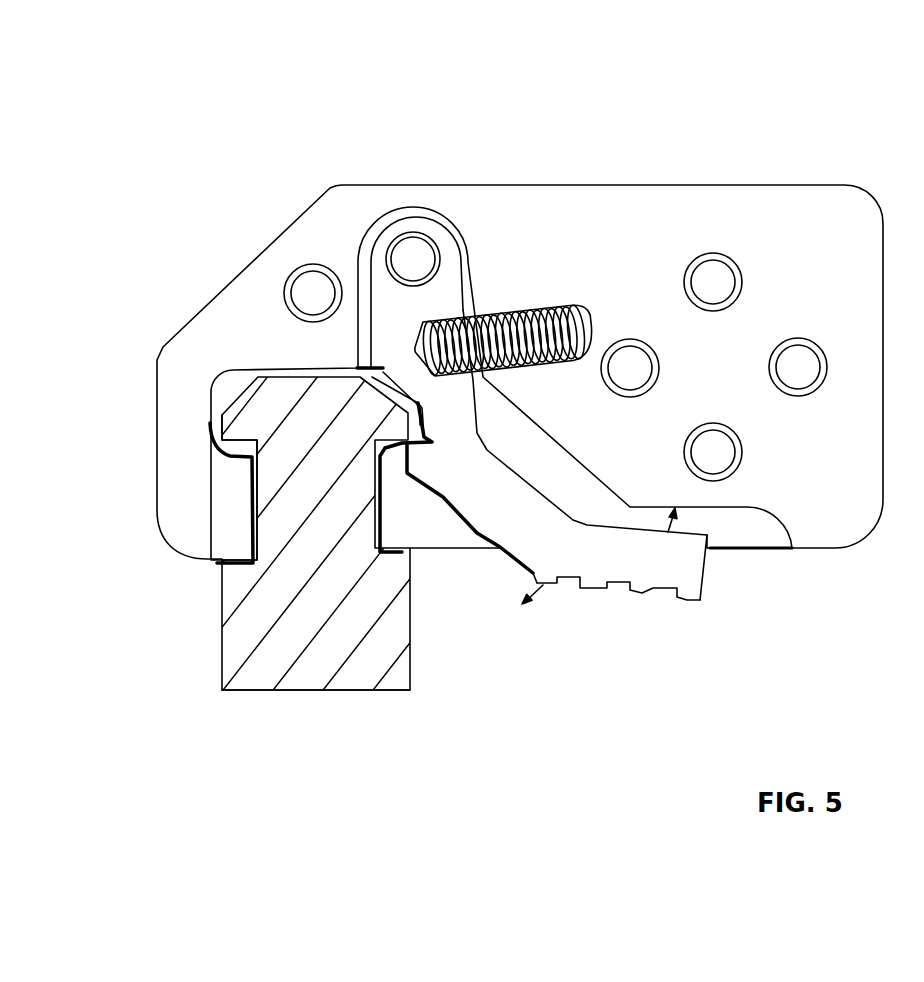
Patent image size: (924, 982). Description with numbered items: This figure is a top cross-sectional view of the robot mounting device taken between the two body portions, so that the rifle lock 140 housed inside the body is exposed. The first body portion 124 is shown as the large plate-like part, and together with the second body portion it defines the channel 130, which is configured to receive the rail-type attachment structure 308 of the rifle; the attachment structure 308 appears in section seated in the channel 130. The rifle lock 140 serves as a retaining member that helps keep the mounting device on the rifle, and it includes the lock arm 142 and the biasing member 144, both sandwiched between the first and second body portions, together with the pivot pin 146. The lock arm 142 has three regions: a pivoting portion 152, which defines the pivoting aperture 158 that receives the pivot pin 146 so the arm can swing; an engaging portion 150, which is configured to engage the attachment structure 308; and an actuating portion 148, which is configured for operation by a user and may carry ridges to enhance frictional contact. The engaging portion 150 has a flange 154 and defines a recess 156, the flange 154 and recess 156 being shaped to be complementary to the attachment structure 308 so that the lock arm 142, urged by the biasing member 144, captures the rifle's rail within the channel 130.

The first body portion 124 is at (637, 120).
The channel 130 is at (232, 392).
The rifle lock 140 is at (575, 610).
The lock arm 142 is at (700, 600).
The biasing member 144 is at (587, 305).
The pivot pin 146 is at (430, 238).
The actuating portion 148 is at (642, 593).
The engaging portion 150 is at (475, 527).
The pivoting portion 152 is at (397, 216).
The flange 154 is at (357, 620).
The recess 156 is at (256, 546).
The pivoting aperture 158 is at (416, 267).
The attachment structure 308 is at (247, 690).